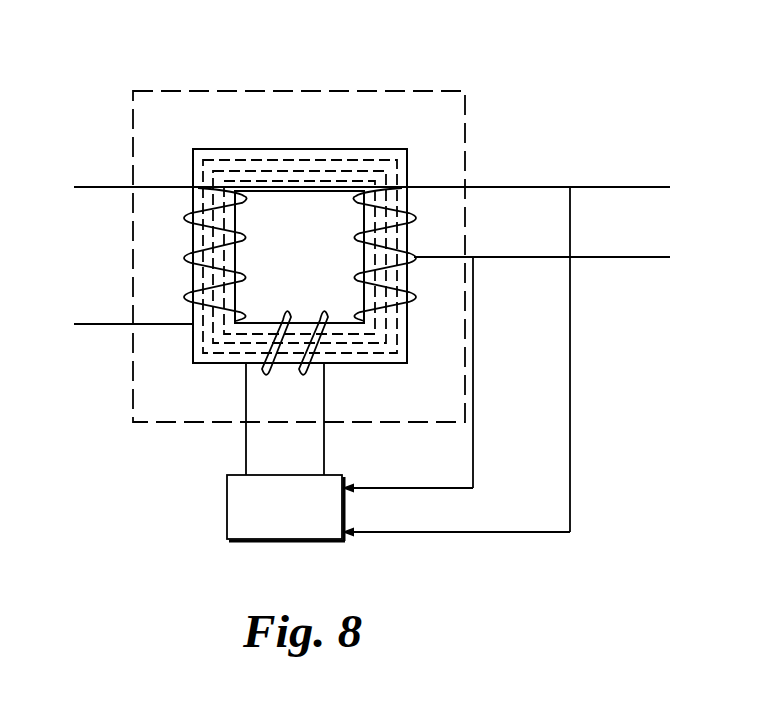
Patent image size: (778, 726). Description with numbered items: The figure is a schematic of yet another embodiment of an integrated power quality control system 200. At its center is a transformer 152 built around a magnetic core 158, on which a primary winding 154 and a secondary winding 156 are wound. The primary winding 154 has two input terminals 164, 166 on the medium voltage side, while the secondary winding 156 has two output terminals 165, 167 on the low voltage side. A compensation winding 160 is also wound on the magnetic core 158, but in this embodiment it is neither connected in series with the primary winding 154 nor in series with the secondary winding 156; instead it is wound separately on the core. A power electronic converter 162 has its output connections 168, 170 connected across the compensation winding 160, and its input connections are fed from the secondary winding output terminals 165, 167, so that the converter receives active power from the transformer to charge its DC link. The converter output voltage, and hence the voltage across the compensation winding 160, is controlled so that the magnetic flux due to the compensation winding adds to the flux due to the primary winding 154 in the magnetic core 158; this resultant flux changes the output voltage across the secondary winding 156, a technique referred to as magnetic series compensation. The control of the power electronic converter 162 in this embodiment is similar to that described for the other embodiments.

The integrated power quality control system 200 is at (513, 42).
The transformer 152 is at (163, 91).
The magnetic core 158 is at (257, 153).
The primary winding 154 is at (242, 275).
The secondary winding 156 is at (355, 237).
The compensation winding 160 is at (332, 306).
The input terminal 164 is at (85, 186).
The input terminal 166 is at (97, 322).
The output terminal 165 is at (512, 186).
The output terminal 167 is at (512, 256).
The output terminal 168 is at (246, 442).
The output terminal 170 is at (327, 407).
The power electronic converter 162 is at (344, 541).